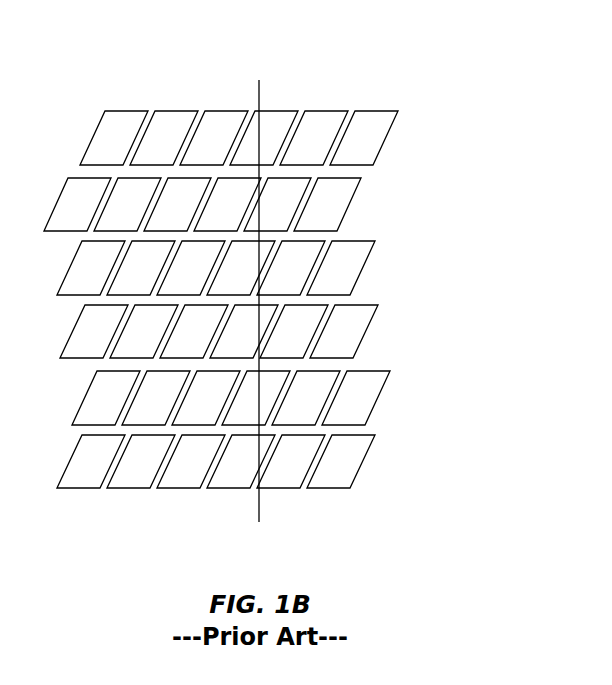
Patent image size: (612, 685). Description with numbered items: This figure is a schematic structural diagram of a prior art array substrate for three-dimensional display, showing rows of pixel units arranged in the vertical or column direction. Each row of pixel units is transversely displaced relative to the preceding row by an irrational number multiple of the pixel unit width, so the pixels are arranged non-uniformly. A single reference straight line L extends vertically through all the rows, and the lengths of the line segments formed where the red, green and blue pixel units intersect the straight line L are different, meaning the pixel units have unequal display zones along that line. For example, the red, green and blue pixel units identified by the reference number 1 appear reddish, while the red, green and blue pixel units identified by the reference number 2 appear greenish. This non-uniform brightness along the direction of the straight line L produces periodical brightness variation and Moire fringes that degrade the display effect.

The first group of pixel units 1 is at (273, 203).
The second group of pixel units 2 is at (280, 396).
The reference straight line L is at (260, 284).